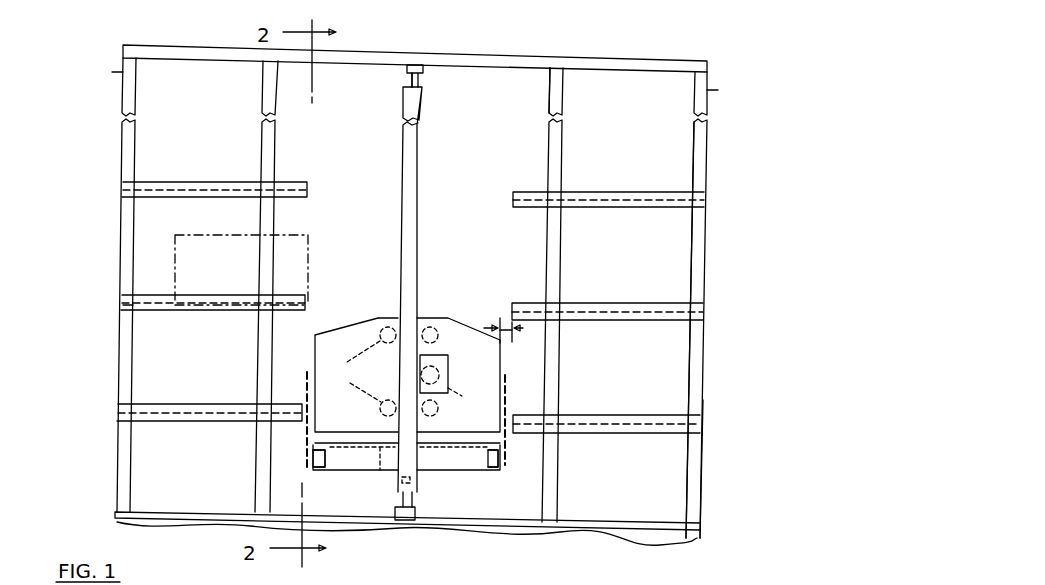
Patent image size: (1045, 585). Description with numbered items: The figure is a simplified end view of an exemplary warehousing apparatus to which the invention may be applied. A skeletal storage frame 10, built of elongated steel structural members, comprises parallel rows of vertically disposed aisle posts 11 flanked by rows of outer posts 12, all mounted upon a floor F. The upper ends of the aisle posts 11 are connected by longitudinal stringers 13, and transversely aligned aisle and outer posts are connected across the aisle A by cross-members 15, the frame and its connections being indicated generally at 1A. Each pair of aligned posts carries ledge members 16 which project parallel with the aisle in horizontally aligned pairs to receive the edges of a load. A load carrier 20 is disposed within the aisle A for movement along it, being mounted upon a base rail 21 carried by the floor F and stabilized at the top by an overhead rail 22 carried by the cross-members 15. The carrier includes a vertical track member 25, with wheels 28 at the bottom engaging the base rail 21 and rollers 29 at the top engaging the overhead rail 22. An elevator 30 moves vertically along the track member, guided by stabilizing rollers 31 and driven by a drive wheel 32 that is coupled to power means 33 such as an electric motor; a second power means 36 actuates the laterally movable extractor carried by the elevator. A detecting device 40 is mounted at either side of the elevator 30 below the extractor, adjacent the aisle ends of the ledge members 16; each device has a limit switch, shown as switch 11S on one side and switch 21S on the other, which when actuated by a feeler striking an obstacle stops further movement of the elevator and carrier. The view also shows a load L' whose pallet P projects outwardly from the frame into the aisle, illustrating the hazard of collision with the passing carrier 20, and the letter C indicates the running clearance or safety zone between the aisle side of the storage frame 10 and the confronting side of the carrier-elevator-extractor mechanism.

The storage frame 10 is at (723, 145).
The aisle posts 11 is at (278, 148).
The outer posts 12 is at (703, 178).
The longitudinal stringers 13 is at (549, 85).
The cross-members 15 is at (451, 52).
The ledge members 16 is at (633, 204).
The frame 1A is at (708, 89).
The load carrier 20 is at (456, 311).
The base rail 21 is at (423, 513).
The overhead rail 22 is at (405, 70).
The vertical track member 25 is at (420, 232).
The wheels 28 is at (402, 500).
The rollers 29 is at (423, 82).
The elevator 30 is at (501, 321).
The stabilizing rollers 31 is at (386, 371).
The drive wheel 32 is at (471, 404).
The power means 33 is at (448, 360).
The power means 36 is at (430, 462).
The detecting device 40 is at (301, 430).
The limit switch 11S is at (316, 462).
The limit switch 21S is at (493, 470).
The aisle A is at (458, 143).
The running clearance C is at (507, 340).
The floor F is at (657, 525).
The load L' is at (253, 255).
The pallet P is at (310, 305).